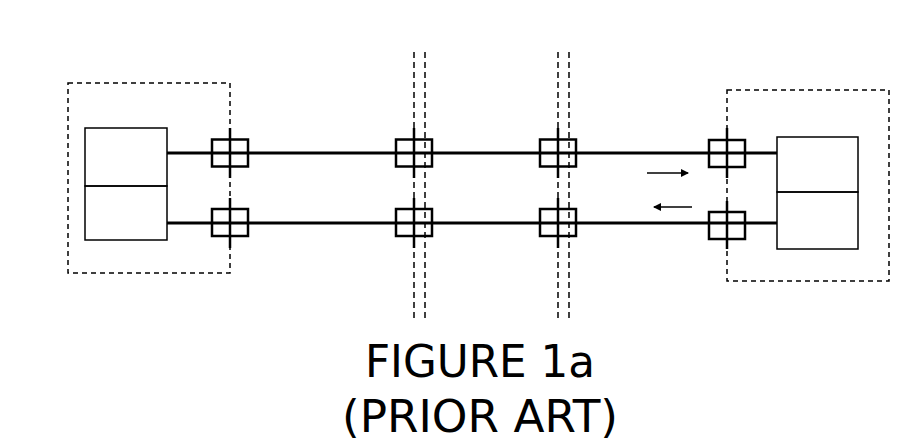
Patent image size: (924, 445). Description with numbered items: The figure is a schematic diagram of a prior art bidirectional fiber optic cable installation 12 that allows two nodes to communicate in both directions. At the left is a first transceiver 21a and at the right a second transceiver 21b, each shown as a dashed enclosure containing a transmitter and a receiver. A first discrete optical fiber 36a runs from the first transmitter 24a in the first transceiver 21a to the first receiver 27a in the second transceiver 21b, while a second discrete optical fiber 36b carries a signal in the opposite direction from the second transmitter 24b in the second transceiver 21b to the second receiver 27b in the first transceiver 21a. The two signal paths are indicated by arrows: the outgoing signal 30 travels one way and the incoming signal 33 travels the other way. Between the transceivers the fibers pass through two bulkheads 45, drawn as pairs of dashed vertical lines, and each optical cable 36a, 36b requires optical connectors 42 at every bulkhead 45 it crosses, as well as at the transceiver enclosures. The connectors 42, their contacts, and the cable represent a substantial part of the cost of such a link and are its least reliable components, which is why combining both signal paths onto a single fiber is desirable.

The bidirectional communication installation 12 is at (316, 64).
The first transceiver 21a is at (134, 81).
The second transceiver 21b is at (806, 81).
The first transmitter 24a is at (75, 135).
The second transmitter 24b is at (808, 250).
The first receiver 27a is at (842, 137).
The second receiver 27b is at (75, 220).
The first discrete optical fiber 36a is at (332, 150).
The second discrete optical fiber 36b is at (332, 220).
The optical connectors 42 is at (223, 135).
The bulkhead 45 is at (422, 52).
The outgoing signal 30 is at (690, 177).
The incoming signal 33 is at (647, 207).